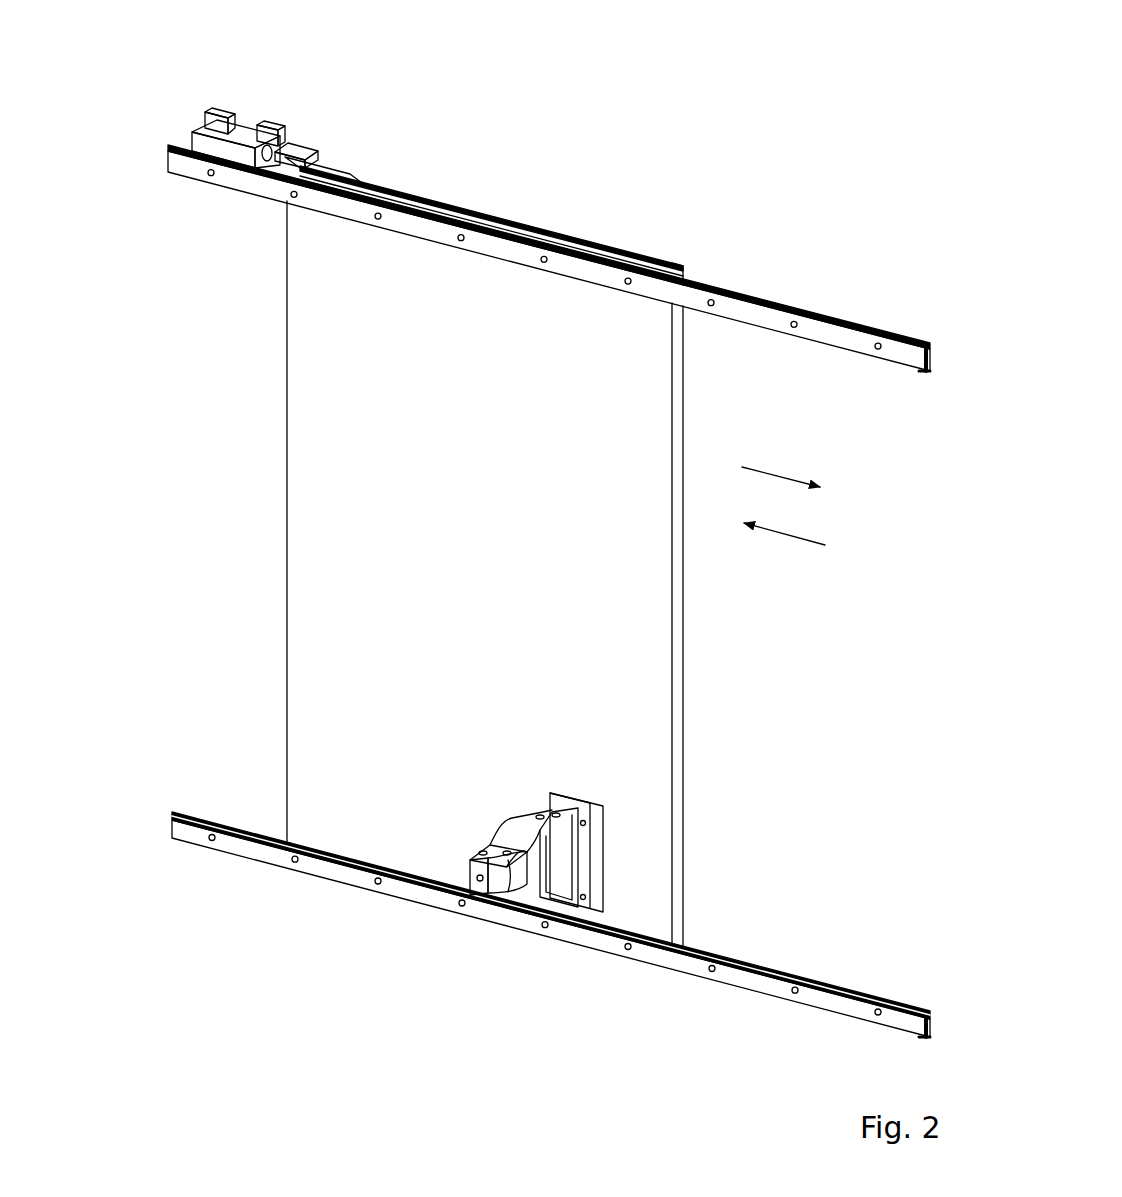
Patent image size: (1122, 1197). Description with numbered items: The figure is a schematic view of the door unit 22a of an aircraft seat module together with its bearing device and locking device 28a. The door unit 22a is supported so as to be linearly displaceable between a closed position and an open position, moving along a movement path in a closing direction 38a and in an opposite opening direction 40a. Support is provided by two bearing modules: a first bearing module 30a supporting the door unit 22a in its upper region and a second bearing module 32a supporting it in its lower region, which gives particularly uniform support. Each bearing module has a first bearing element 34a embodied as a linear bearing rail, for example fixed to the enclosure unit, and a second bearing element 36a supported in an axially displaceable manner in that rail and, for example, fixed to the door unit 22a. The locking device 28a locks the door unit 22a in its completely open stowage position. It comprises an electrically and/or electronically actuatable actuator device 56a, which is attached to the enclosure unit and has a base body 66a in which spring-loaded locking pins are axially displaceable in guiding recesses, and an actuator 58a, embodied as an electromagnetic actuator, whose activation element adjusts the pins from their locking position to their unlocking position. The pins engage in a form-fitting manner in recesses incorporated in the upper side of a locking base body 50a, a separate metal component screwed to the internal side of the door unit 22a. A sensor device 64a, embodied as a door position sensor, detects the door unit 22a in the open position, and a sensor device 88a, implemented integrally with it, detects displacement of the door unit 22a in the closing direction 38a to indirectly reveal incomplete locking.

The door unit 22a is at (388, 520).
The locking device 28a is at (573, 936).
The first bearing module 30a is at (156, 157).
The second bearing module 32a is at (486, 866).
The first bearing element 34a is at (237, 843).
The second bearing element 36a is at (306, 834).
The closing direction 38a is at (787, 472).
The opening direction 40a is at (786, 542).
The locking base body 50a is at (583, 862).
The actuator device 56a is at (515, 916).
The actuator 58a is at (495, 907).
The sensor device 64a is at (228, 150).
The base body 66a is at (470, 870).
The sensor device 88a is at (249, 151).